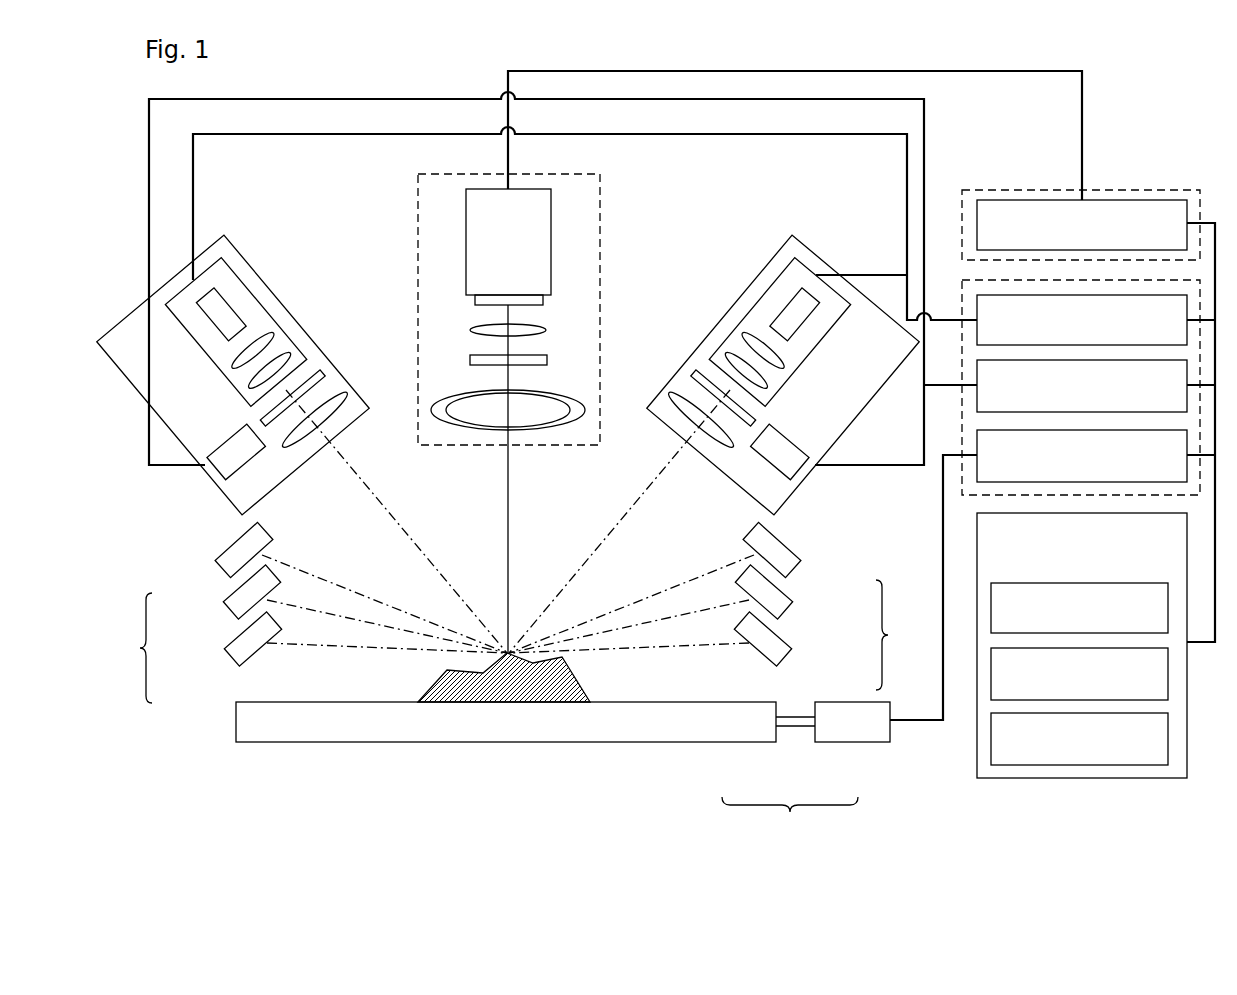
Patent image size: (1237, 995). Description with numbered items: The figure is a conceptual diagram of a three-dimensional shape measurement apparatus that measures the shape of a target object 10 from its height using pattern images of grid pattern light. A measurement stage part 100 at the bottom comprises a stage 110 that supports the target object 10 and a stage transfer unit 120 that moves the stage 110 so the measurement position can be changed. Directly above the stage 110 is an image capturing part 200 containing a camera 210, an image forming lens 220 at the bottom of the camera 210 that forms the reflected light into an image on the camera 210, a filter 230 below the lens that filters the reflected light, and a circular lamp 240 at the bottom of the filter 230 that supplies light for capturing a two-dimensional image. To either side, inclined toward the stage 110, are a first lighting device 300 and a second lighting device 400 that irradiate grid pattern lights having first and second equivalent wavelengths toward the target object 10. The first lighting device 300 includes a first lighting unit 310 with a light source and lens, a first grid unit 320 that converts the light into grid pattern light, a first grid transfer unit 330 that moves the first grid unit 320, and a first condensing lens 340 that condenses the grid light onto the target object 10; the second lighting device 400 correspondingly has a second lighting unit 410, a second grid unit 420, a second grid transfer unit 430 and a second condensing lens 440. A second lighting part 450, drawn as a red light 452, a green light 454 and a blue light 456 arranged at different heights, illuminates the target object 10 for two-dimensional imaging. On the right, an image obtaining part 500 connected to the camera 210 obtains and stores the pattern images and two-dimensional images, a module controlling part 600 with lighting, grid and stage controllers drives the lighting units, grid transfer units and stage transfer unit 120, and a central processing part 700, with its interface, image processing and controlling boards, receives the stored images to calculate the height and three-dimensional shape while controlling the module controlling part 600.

The target object 10 is at (487, 702).
The measurement stage part 100 is at (790, 816).
The stage 110 is at (748, 722).
The stage transfer unit 120 is at (833, 720).
The image capturing part 200 is at (600, 223).
The camera 210 is at (465, 235).
The image forming lens 220 is at (537, 323).
The filter 230 is at (470, 357).
The circular lamp 240 is at (463, 427).
The first lighting device 300 is at (760, 507).
The first lighting unit 310 is at (780, 250).
The first grid unit 320 is at (712, 360).
The first grid transfer unit 330 is at (760, 465).
The first condensing lens 340 is at (687, 400).
The second lighting device 400 is at (222, 491).
The second lighting unit 410 is at (250, 290).
The second grid unit 420 is at (318, 370).
The second grid transfer unit 430 is at (253, 460).
The second condensing lens 440 is at (303, 457).
The second lighting part 450 is at (517, 641).
The red light 452 is at (218, 567).
The green light 454 is at (225, 605).
The blue light 456 is at (227, 658).
The image obtaining part 500 is at (1017, 188).
The module controlling part 600 is at (958, 478).
The central processing part 700 is at (1017, 779).